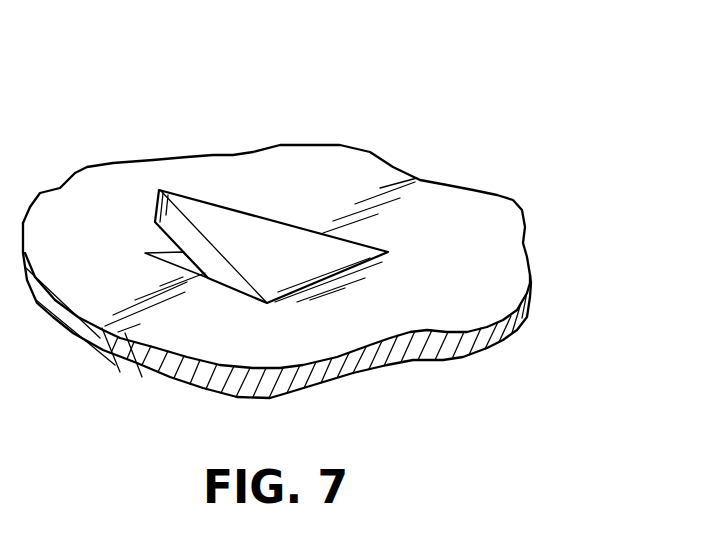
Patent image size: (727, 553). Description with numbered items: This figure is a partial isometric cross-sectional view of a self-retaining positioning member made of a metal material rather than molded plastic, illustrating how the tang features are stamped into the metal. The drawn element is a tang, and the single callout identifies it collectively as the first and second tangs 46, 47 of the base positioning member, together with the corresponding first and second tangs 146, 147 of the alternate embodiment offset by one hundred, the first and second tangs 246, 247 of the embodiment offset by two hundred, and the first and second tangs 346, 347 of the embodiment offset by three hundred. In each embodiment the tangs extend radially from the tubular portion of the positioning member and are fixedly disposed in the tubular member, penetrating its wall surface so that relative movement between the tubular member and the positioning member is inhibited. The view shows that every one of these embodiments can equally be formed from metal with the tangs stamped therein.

The first tang 46 is at (400, 170).
The second tang 47 is at (266, 246).
The first tang 146 is at (266, 246).
The second tang 147 is at (266, 246).
The first tang 246 is at (266, 246).
The second tang 247 is at (266, 246).
The first tang 346 is at (266, 246).
The second tang 347 is at (272, 238).